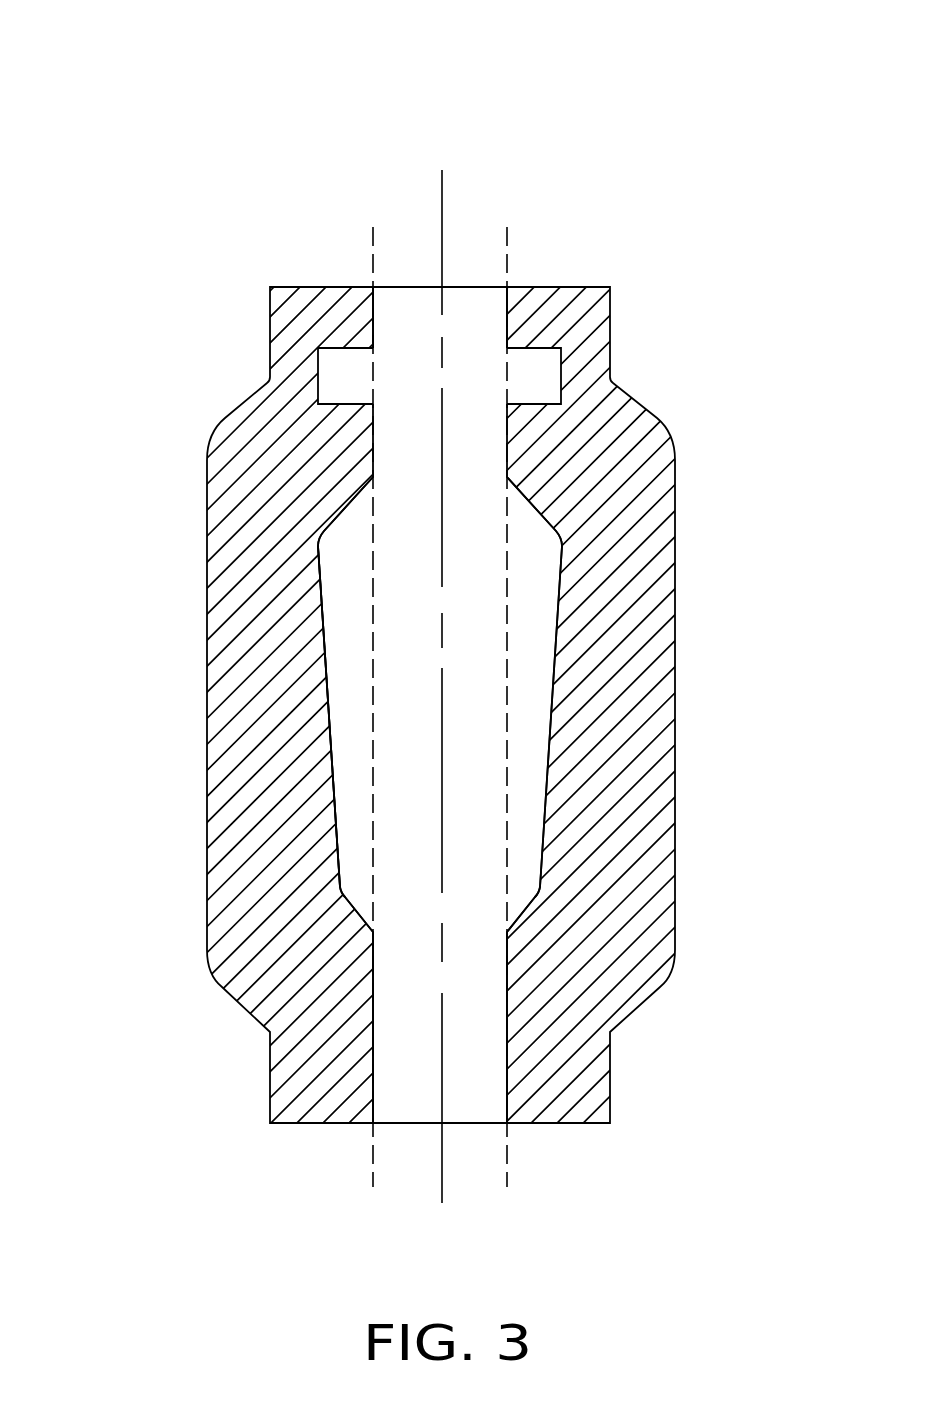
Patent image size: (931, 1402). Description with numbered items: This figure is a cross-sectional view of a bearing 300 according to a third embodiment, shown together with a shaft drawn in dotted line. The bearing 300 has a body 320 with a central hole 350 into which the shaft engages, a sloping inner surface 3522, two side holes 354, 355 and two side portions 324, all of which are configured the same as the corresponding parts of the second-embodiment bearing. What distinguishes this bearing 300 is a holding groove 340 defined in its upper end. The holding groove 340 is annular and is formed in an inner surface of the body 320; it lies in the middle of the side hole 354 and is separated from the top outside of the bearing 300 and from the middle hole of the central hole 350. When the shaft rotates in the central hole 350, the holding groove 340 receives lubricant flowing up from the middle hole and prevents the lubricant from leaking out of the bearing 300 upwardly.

The bearing 300 is at (437, 701).
The body 320 is at (483, 701).
The side portions 324 is at (582, 328).
The holding groove 340 is at (340, 373).
The central hole 350 is at (403, 632).
The sloping inner surface 3522 is at (317, 663).
The side hole 354 is at (412, 318).
The side hole 355 is at (410, 1098).